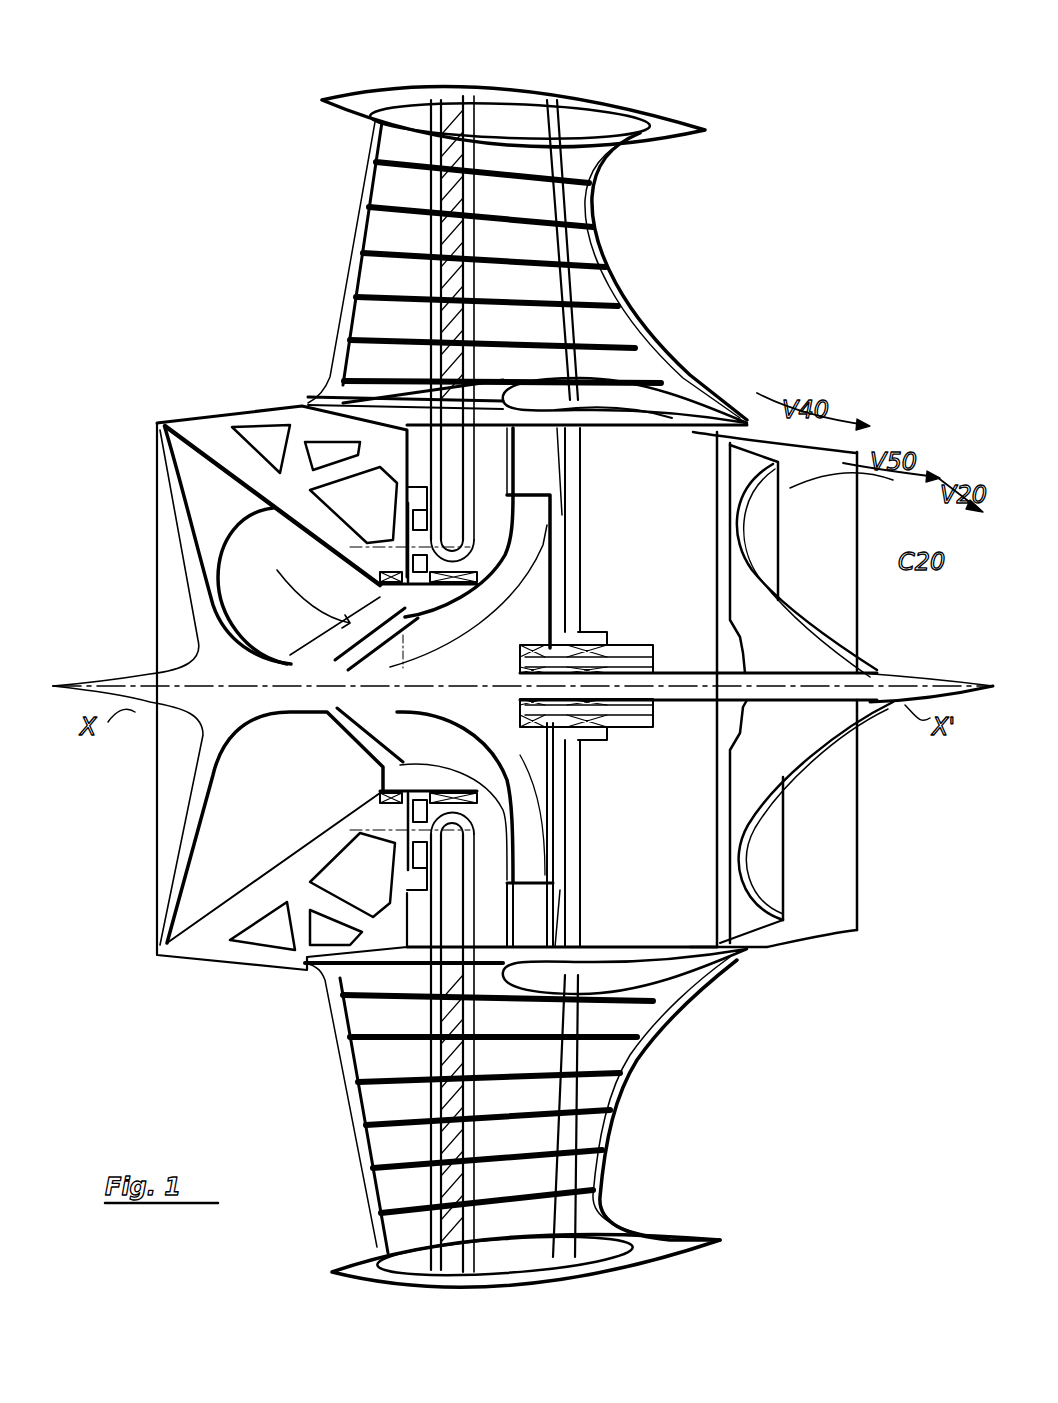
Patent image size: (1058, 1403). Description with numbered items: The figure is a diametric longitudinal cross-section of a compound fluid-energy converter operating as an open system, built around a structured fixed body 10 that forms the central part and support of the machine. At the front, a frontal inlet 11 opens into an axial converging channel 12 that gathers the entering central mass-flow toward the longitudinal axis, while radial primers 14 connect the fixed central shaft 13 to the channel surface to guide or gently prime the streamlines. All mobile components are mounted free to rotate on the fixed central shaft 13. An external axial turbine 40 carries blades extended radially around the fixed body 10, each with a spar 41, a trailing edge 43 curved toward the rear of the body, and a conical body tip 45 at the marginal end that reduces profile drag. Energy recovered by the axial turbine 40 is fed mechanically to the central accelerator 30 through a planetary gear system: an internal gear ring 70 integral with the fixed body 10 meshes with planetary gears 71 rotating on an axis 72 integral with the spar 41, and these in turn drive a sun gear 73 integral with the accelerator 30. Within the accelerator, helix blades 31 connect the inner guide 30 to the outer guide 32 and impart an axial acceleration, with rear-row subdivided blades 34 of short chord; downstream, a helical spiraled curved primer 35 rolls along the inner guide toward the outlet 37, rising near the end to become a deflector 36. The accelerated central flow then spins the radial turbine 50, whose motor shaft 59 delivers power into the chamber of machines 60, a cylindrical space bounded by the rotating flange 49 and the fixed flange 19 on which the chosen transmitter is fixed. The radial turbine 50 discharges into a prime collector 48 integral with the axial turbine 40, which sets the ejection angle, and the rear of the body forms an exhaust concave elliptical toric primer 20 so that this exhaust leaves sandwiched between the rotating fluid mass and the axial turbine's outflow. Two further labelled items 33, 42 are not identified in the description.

The fixed body 10 is at (214, 425).
The frontal inlet 11 is at (157, 481).
The axial converging channel 12 is at (291, 512).
The fixed central shaft 13 is at (330, 738).
The radial primers 14 is at (219, 493).
The fixed flange 19 is at (712, 532).
The exhaust partial concave elliptical toric primer 20 is at (828, 628).
The central accelerator 30 is at (323, 643).
The helix blades 31 is at (355, 620).
The outer guide 32 is at (390, 590).
The passage wall 33 is at (352, 622).
The rear row subdivided blades 34 is at (388, 740).
The helical spiraled curved primer 35 is at (413, 657).
The deflector 36 is at (525, 855).
The outlet 37 is at (547, 525).
The external axial turbine 40 is at (395, 232).
The spar 41 is at (435, 283).
The ribs 42 is at (345, 322).
The trailing edge 43 is at (615, 245).
The conical body tip 45 is at (567, 93).
The prime collector 48 is at (645, 388).
The rotating flange 49 is at (575, 580).
The radial turbine 50 is at (525, 445).
The motor shaft 59 is at (625, 660).
The chamber of machines 60 is at (662, 773).
The internal gear ring 70 is at (415, 492).
The planetary gears 71 is at (440, 521).
The axis 72 is at (400, 548).
The sun gear 73 is at (410, 595).